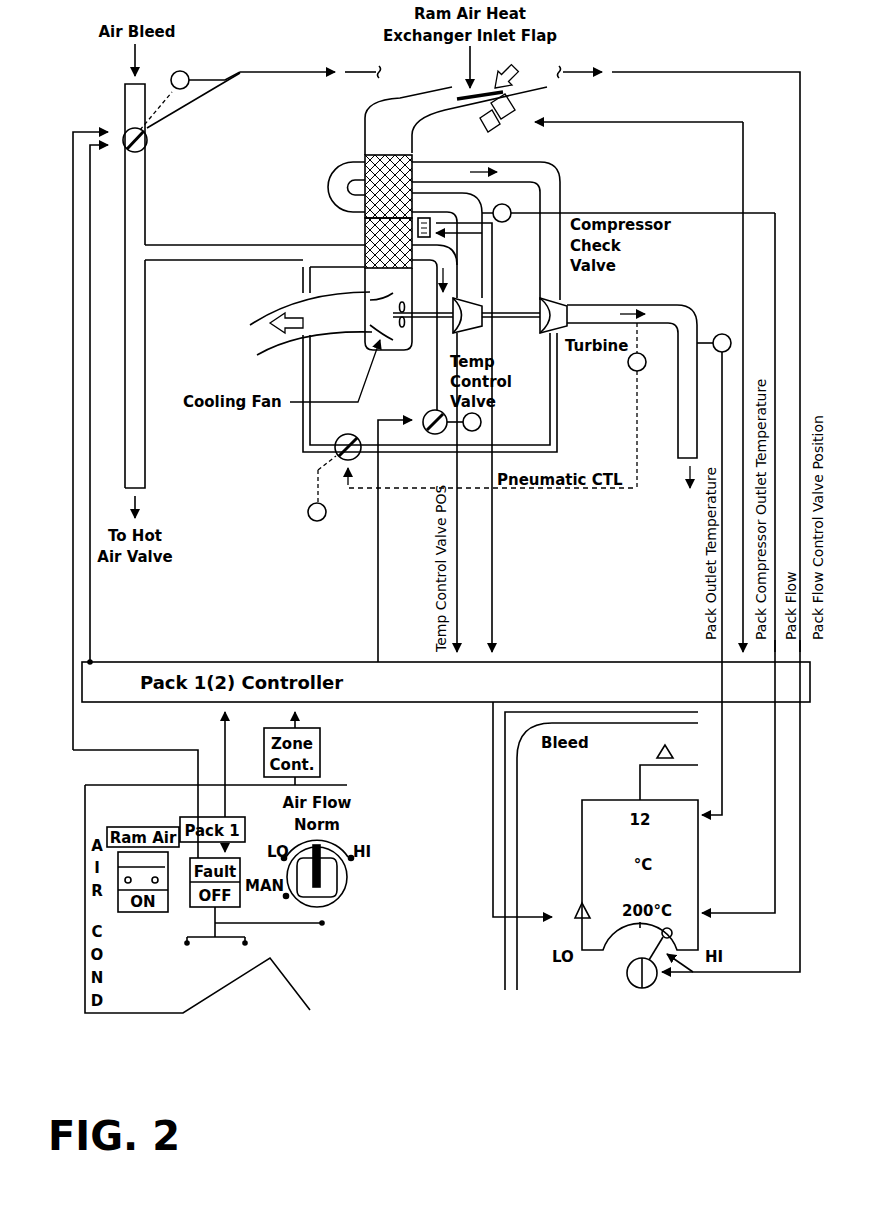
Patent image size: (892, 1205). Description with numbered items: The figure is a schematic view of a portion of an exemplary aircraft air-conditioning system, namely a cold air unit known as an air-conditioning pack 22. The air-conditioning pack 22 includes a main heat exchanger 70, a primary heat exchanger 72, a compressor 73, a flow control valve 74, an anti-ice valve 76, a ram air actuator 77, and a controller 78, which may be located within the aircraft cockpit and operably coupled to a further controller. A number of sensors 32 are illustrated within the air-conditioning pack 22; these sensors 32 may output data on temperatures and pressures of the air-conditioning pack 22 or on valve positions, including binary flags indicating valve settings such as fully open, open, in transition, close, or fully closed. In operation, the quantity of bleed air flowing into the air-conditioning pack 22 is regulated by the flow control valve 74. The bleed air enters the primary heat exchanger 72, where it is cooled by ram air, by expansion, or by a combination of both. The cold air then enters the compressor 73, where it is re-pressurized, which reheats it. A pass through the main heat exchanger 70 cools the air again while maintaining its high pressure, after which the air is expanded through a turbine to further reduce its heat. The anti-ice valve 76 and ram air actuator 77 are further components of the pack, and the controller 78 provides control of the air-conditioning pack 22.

The air-conditioning pack 22 is at (572, 164).
The sensors 32 is at (190, 74).
The main heat exchanger 70 is at (365, 200).
The primary heat exchanger 72 is at (365, 228).
The compressor 73 is at (470, 333).
The flow control valve 74 is at (135, 152).
The anti-ice valve 76 is at (338, 455).
The ram air actuator 77 is at (497, 134).
The controller 78 is at (345, 893).